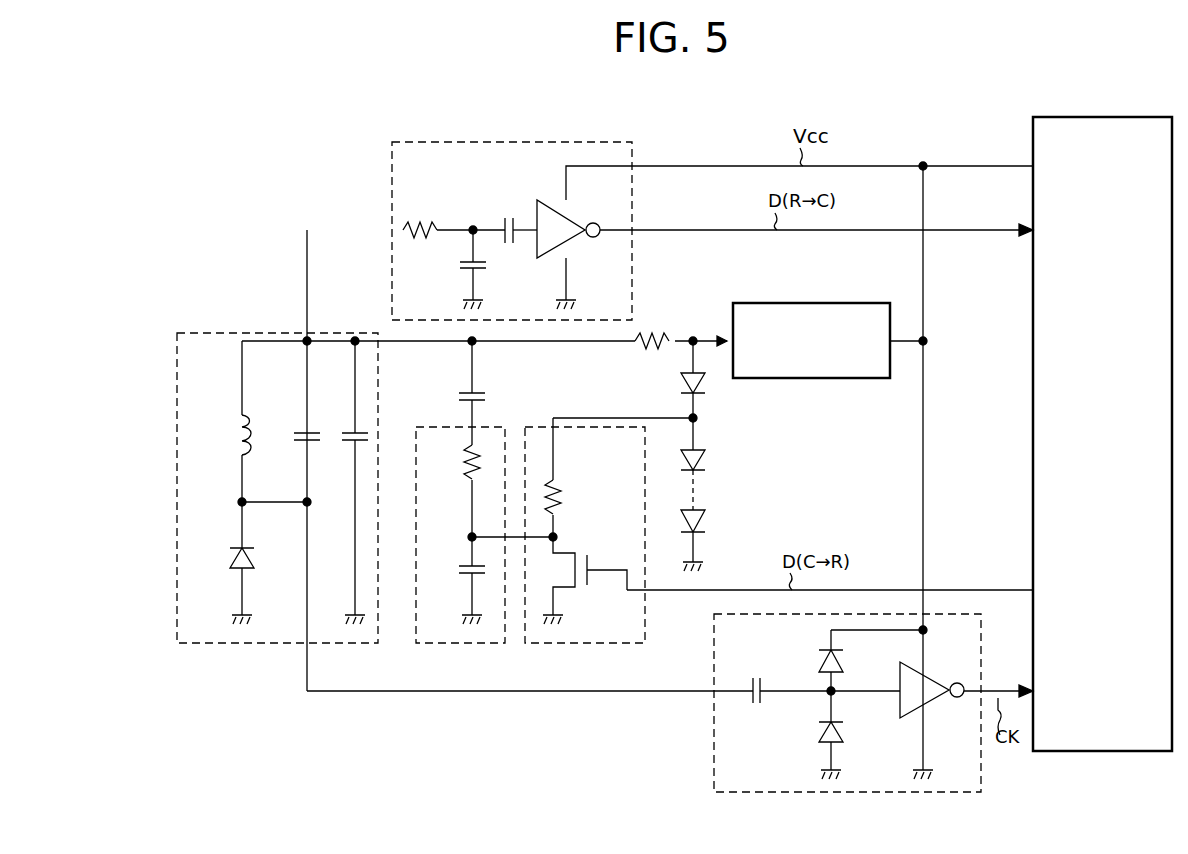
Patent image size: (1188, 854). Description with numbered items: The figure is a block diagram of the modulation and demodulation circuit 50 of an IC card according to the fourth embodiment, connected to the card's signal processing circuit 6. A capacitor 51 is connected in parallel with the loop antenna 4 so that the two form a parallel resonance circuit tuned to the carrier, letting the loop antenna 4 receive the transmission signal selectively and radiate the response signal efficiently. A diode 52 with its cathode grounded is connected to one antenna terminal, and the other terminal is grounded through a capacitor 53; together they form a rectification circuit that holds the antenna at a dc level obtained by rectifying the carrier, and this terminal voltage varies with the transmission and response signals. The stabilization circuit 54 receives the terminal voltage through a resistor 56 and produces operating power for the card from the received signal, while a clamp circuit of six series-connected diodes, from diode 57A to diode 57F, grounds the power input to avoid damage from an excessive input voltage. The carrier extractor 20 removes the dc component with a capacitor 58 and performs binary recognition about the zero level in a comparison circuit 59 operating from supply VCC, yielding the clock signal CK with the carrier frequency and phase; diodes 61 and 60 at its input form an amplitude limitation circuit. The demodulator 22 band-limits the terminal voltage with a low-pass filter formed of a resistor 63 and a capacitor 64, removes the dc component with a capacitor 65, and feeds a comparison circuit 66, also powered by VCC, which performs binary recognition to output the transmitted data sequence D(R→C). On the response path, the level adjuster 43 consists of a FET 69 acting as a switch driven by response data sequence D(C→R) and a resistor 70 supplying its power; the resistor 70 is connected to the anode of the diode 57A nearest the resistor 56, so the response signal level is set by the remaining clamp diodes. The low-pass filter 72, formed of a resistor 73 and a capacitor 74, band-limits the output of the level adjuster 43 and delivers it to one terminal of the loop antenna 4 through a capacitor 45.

The loop antenna 4 is at (236, 438).
The signal processing circuit 6 is at (1150, 117).
The carrier extractor 20 is at (712, 738).
The demodulator 22 is at (392, 162).
The level adjuster 43 is at (585, 645).
The capacitor 45 is at (480, 400).
The modulation and demodulation circuit 50 is at (282, 717).
The capacitor 51 is at (297, 432).
The diode 52 is at (232, 558).
The capacitor 53 is at (344, 432).
The stabilization circuit 54 is at (860, 303).
The resistor 56 is at (665, 327).
The diode 57A is at (754, 456).
The diode 57F is at (693, 540).
The capacitor 58 is at (756, 705).
The comparison circuit 59 is at (930, 680).
The diode 60 is at (838, 736).
The diode 61 is at (821, 660).
The resistor 63 is at (433, 224).
The capacitor 64 is at (455, 265).
The capacitor 65 is at (508, 216).
The comparison circuit 66 is at (578, 242).
The FET 69 is at (588, 564).
The resistor 70 is at (558, 500).
The low-pass filter 72 is at (448, 645).
The resistor 73 is at (468, 466).
The capacitor 74 is at (461, 572).